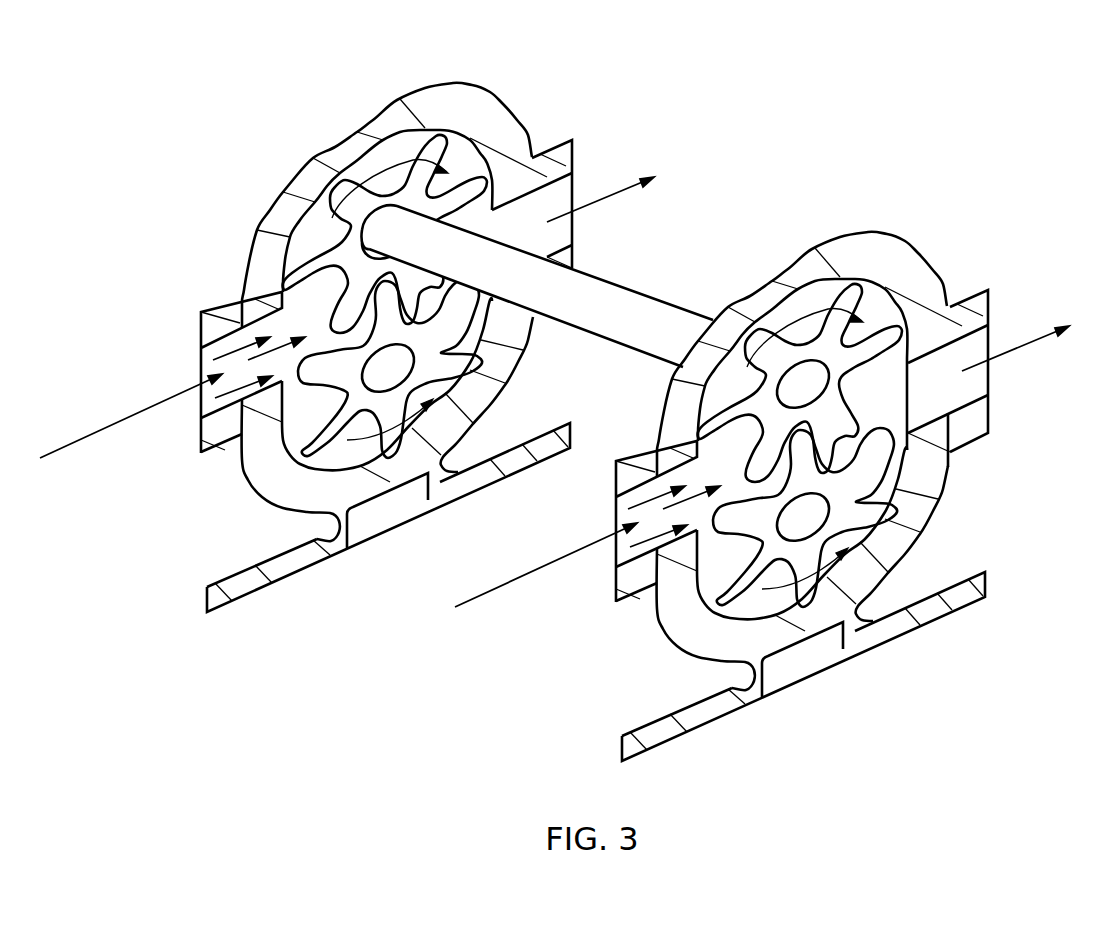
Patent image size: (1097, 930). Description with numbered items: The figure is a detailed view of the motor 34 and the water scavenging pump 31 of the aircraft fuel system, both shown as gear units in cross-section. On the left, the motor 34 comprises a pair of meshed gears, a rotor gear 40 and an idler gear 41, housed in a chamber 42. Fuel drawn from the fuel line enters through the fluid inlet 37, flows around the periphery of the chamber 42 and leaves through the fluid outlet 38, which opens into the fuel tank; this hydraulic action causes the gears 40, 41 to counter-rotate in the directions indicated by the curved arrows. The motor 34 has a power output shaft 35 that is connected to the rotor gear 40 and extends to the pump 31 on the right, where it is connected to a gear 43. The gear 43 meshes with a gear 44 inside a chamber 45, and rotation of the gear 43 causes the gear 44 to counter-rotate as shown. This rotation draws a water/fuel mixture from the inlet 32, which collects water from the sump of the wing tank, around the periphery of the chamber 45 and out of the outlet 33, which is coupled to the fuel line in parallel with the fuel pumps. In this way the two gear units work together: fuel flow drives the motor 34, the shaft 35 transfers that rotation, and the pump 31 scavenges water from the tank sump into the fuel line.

The pump 31 is at (762, 462).
The inlet 32 is at (653, 555).
The outlet 33 is at (957, 342).
The motor 34 is at (347, 328).
The power output shaft 35 is at (645, 294).
The fluid inlet 37 is at (213, 303).
The fluid outlet 38 is at (553, 142).
The rotor gear 40 is at (408, 148).
The idler gear 41 is at (307, 430).
The chamber 42 is at (485, 85).
The gear 43 is at (812, 383).
The gear 44 is at (851, 517).
The chamber 45 is at (809, 439).